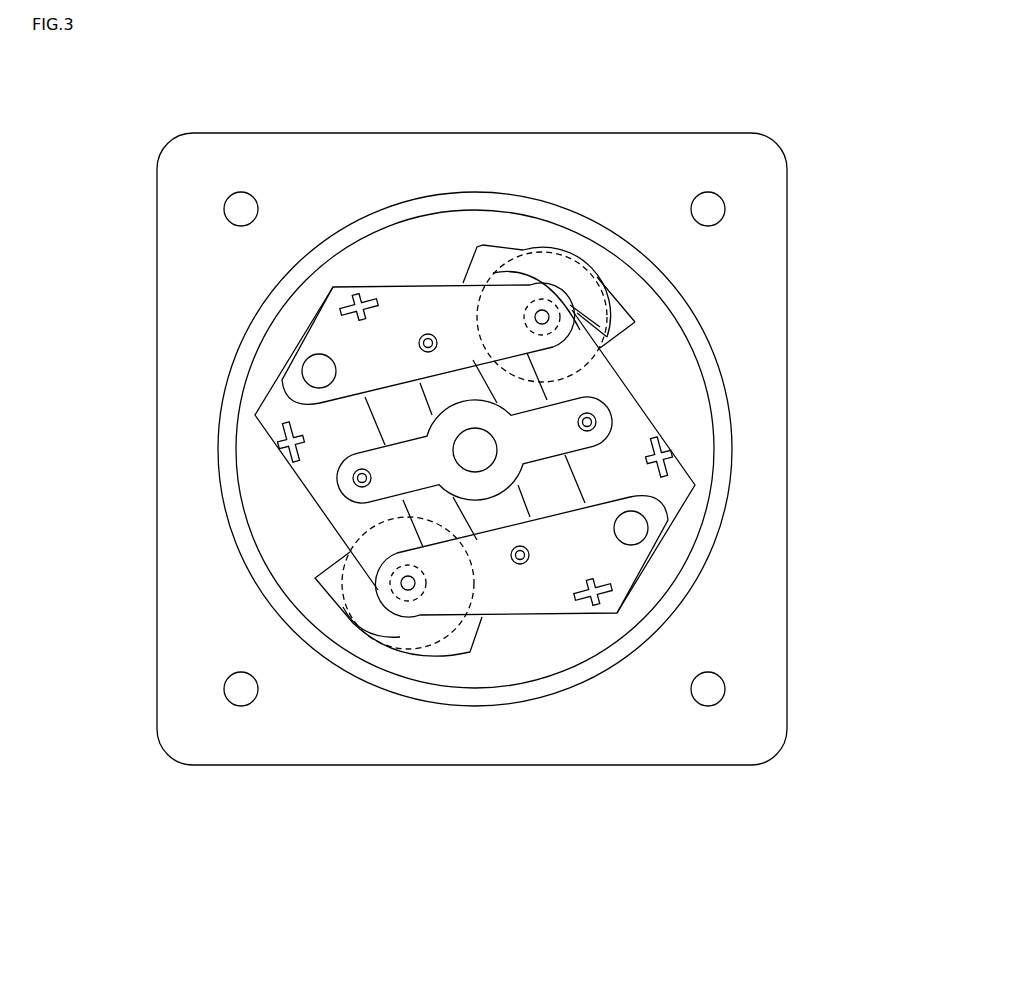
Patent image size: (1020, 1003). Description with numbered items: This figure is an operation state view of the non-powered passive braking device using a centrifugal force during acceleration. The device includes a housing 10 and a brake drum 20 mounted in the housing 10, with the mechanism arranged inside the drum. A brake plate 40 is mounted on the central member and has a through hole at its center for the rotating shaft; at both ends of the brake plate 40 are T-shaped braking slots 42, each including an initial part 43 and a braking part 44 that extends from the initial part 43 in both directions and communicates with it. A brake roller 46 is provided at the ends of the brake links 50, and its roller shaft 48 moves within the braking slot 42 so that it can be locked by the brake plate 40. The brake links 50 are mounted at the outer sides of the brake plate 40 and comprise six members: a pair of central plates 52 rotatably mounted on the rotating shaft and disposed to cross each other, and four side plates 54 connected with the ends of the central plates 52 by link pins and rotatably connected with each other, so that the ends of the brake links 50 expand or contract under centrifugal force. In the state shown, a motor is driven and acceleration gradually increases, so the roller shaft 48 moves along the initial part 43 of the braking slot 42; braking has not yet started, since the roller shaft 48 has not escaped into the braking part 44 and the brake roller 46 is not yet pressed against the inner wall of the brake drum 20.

The housing 10 is at (158, 336).
The brake drum 20 is at (220, 457).
The brake plate 40 is at (477, 247).
The braking slot 42 is at (701, 283).
The initial part 43 is at (637, 388).
The braking part 44 is at (615, 360).
The brake roller 46 is at (545, 250).
The roller shaft 48 is at (545, 313).
The brake link 50 is at (472, 475).
The central plate 52 is at (443, 493).
The side plate 54 is at (393, 282).